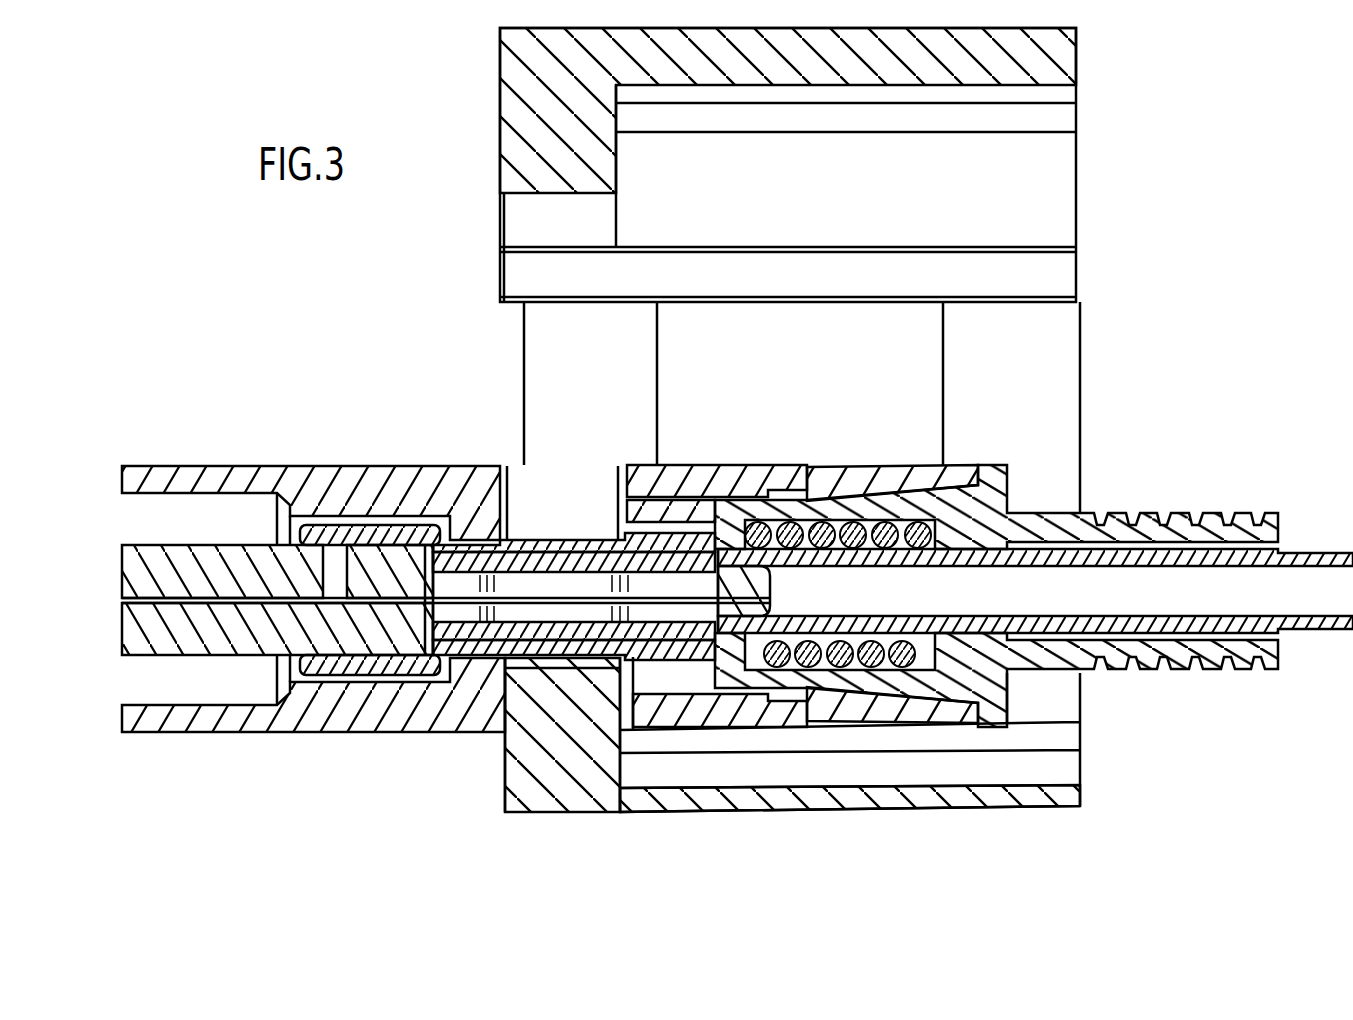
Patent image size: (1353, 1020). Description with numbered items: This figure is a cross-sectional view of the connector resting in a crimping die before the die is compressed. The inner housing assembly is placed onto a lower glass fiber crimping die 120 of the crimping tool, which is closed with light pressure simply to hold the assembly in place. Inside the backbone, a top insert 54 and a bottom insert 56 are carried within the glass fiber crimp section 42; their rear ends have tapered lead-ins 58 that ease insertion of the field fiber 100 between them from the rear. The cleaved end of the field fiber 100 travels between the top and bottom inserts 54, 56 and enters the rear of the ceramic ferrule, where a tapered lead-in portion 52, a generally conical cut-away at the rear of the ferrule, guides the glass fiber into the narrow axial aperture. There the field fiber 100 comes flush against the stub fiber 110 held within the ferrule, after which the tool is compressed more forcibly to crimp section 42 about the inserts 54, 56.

The glass fiber crimp section 42 is at (556, 660).
The tapered lead-in portion 52 is at (385, 645).
The top insert 54 is at (648, 578).
The bottom insert 56 is at (641, 640).
The tapered lead-ins 58 is at (684, 560).
The field fiber 100 is at (463, 640).
The stub fiber 110 is at (246, 603).
The lower glass fiber crimping die 120 is at (505, 765).